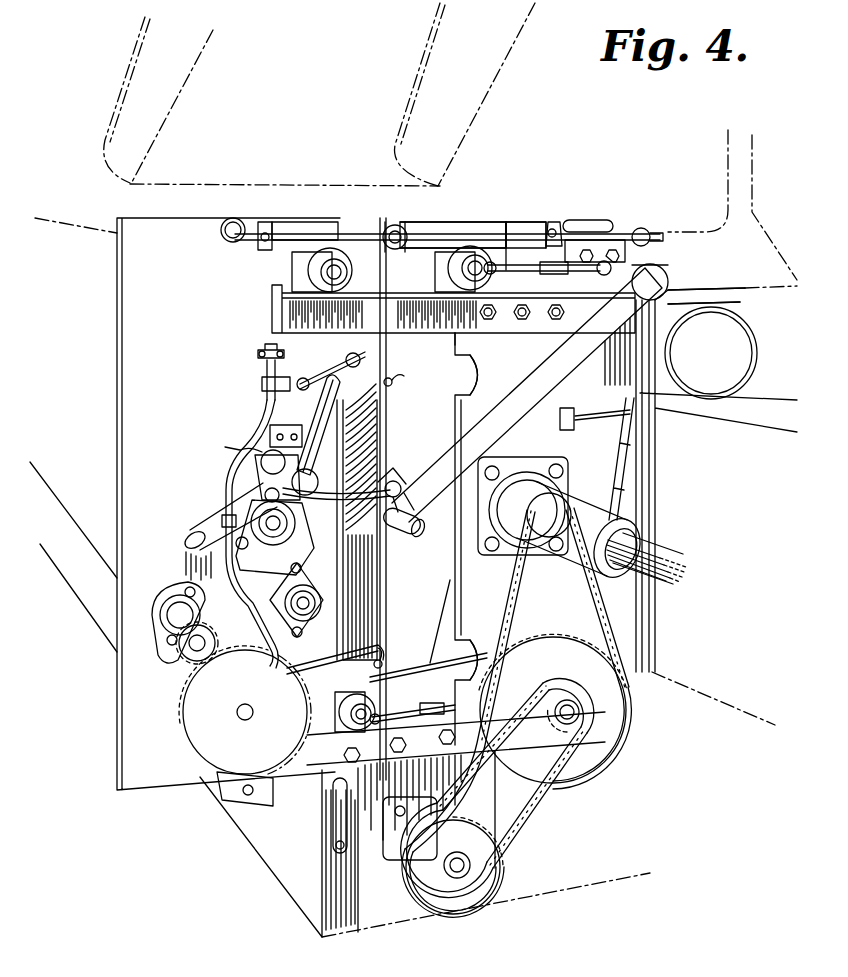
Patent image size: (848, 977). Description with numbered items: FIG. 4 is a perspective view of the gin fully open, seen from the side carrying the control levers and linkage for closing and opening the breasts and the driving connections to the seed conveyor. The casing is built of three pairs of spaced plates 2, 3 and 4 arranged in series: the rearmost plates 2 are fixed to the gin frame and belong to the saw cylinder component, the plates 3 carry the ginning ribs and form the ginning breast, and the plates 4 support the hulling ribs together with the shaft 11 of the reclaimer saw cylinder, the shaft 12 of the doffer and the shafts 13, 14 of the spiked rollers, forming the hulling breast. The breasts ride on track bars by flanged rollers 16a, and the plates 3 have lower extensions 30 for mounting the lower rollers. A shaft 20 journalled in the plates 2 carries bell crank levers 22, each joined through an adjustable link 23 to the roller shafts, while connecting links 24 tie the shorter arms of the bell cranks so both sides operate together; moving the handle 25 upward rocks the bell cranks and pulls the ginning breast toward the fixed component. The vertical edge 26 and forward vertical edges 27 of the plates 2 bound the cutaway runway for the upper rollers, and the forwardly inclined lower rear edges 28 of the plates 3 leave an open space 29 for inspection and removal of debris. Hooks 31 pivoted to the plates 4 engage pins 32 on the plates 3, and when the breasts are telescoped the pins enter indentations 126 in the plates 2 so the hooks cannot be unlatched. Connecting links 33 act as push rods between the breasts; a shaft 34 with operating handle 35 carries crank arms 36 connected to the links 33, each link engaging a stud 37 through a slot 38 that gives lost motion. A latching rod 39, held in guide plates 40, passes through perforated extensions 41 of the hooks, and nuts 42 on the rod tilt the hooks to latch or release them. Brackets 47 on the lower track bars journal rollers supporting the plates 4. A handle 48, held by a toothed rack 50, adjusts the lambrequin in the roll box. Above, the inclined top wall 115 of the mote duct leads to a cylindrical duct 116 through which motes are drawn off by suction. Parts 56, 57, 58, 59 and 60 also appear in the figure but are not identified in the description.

The plates 2 is at (462, 405).
The plates 3 is at (440, 222).
The plates 4 is at (196, 232).
The shaft of the reclaimer saw cylinder 11 is at (253, 708).
The shaft of the doffer 12 is at (200, 640).
The shaft of spiked roller 13 is at (306, 600).
The shaft of spiked roller 14 is at (282, 525).
The flanged rollers 16a is at (352, 253).
The shaft 20 is at (662, 277).
The bell crank levers 22 is at (660, 266).
The adjustable link 23 is at (540, 264).
The connecting links 24 is at (612, 430).
The handle 25 is at (553, 380).
The vertical edge 26 is at (580, 226).
The forward vertical edges 27 is at (457, 345).
The lower rear edges 28 is at (436, 630).
The open space 29 is at (452, 646).
The extensions 30 is at (320, 736).
The hooks 31 is at (330, 366).
The pins 32 is at (384, 655).
The connecting links 33 is at (326, 498).
The shaft 34 is at (232, 447).
The operating handle 35 is at (212, 510).
The crank arm 36 is at (260, 462).
The stud 37 is at (395, 480).
The slots 38 is at (412, 498).
The latching and releasing rod 39 is at (248, 590).
The guide plate 40 is at (300, 380).
The flat perforated extensions 41 is at (262, 386).
The nuts 42 is at (262, 355).
The brackets 47 is at (266, 795).
The handle 48 is at (320, 406).
The toothed rack 50 is at (316, 478).
The block 56 is at (552, 222).
The plate 57 is at (500, 232).
The collar 58 is at (272, 228).
The collar 59 is at (396, 226).
The collar 60 is at (641, 230).
The top wall 115 is at (712, 294).
The cylindrical duct 116 is at (757, 340).
The indentations 126 is at (484, 385).